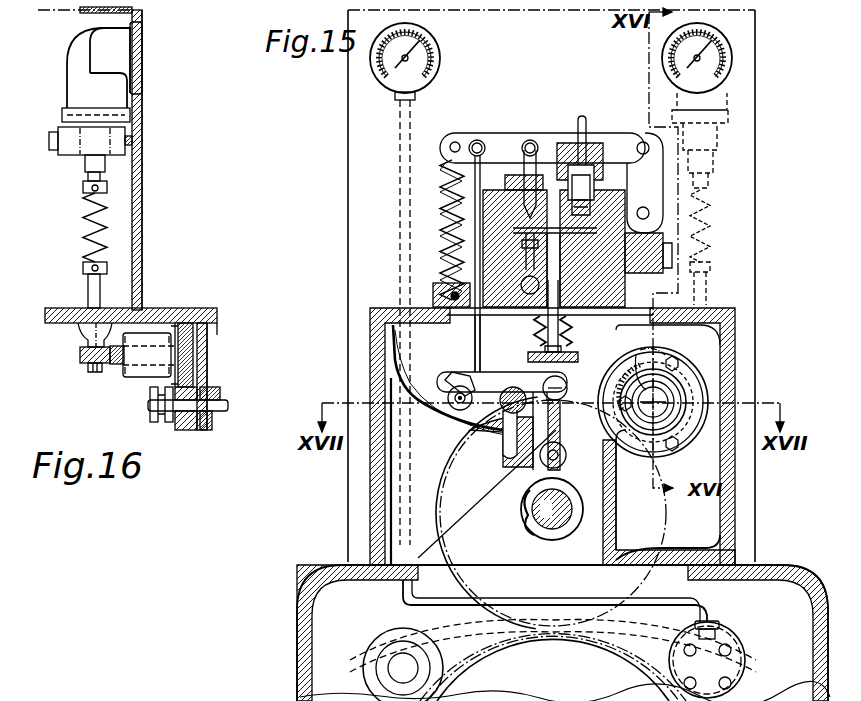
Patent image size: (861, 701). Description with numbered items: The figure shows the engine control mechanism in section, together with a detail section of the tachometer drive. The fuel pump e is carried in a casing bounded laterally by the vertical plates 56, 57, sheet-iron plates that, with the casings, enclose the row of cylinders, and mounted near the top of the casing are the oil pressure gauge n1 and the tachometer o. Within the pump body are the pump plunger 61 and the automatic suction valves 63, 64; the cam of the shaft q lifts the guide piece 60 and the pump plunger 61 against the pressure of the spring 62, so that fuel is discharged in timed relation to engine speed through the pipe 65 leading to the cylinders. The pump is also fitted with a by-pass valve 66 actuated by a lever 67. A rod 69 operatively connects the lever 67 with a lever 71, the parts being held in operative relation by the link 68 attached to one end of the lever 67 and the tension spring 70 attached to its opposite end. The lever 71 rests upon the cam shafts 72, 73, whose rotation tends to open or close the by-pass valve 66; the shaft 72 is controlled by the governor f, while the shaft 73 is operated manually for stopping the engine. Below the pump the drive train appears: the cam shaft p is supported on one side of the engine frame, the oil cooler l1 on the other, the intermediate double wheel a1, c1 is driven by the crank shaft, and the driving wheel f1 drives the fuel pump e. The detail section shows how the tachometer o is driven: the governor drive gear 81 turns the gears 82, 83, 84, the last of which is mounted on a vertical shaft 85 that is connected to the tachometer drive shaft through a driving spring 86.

In FIG. 16, the tachometer o is at (135, 53).
In FIG. 15, the tachometer o is at (727, 65).
In FIG. 16, the driving spring 86 is at (83, 222).
In FIG. 15, the driving spring 86 is at (712, 224).
In FIG. 16, the vertical shaft 85 is at (92, 290).
In FIG. 15, the vertical shaft 85 is at (704, 292).
In FIG. 16, the gear 83 is at (82, 360).
In FIG. 16, the gear 84 is at (96, 373).
In FIG. 16, the gear 82 is at (195, 352).
In FIG. 16, the governor drive gear 81 is at (180, 430).
In FIG. 15, the vertical plate 56 is at (348, 208).
In FIG. 15, the vertical plate 57 is at (755, 177).
In FIG. 15, the oil pressure gauge n1 is at (432, 66).
In FIG. 15, the lever 67 is at (466, 138).
In FIG. 15, the by-pass valve 66 is at (530, 168).
In FIG. 15, the automatic suction valve 64 is at (590, 190).
In FIG. 15, the pipe 65 is at (586, 132).
In FIG. 15, the link 68 is at (645, 183).
In FIG. 15, the rod 69 is at (447, 181).
In FIG. 15, the tension spring 70 is at (450, 212).
In FIG. 15, the fuel pump e is at (600, 267).
In FIG. 15, the automatic suction valve 63 is at (500, 305).
In FIG. 15, the spring 62 is at (535, 330).
In FIG. 15, the pump plunger 61 is at (566, 318).
In FIG. 15, the guide piece 60 is at (566, 378).
In FIG. 15, the lever 71 is at (452, 384).
In FIG. 15, the cam shaft 72 is at (462, 420).
In FIG. 15, the cam shaft 73 is at (512, 425).
In FIG. 15, the governor f is at (692, 392).
In FIG. 15, the shaft q is at (540, 512).
In FIG. 15, the driving wheel f1 is at (483, 592).
In FIG. 15, the cam shaft p is at (383, 670).
In FIG. 15, the intermediate double wheel a1 is at (520, 656).
In FIG. 15, the intermediate double wheel c1 is at (553, 661).
In FIG. 15, the oil cooler l1 is at (725, 666).